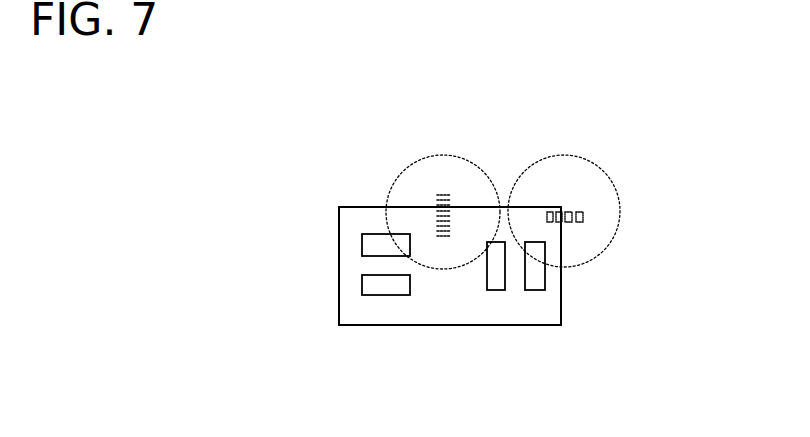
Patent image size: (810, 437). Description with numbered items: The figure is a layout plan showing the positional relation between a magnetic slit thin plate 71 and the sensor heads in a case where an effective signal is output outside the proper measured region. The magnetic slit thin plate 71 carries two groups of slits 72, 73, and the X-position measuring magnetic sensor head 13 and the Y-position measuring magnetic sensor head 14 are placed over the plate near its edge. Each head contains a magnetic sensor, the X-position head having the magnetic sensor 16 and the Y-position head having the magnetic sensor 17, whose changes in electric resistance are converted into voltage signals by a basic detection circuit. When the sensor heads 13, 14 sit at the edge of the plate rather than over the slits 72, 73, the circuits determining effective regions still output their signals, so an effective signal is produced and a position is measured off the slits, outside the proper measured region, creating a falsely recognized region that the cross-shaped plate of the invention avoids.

The X-position measuring magnetic sensor head 13 is at (608, 227).
The Y-position measuring magnetic sensor head 14 is at (420, 178).
The magnetic sensor 16 is at (578, 212).
The magnetic sensor 17 is at (447, 198).
The magnetic slit thin plate 71 is at (488, 317).
The slits 72 is at (535, 280).
The slits 73 is at (387, 287).